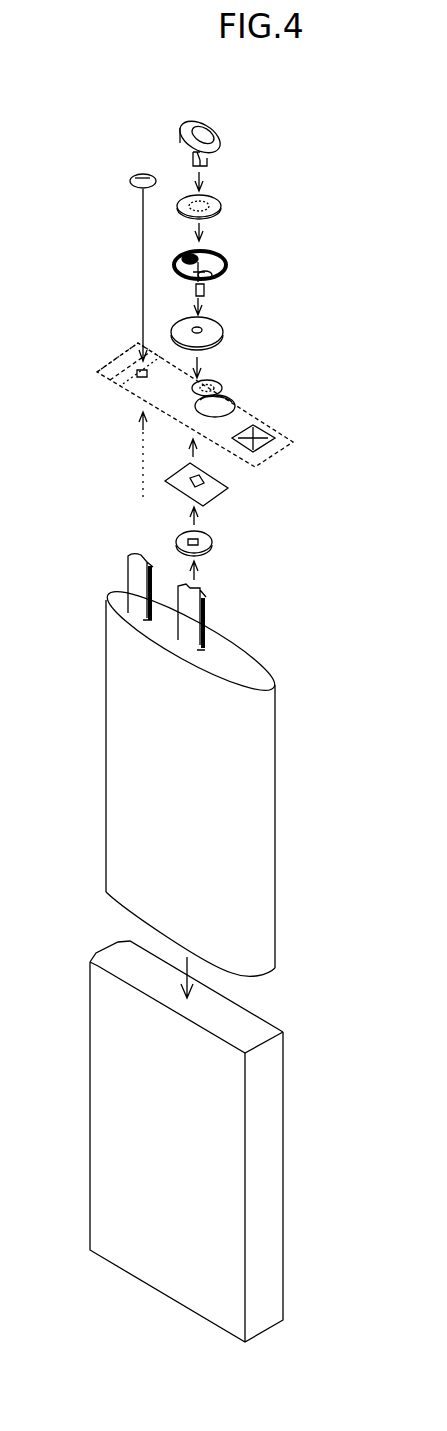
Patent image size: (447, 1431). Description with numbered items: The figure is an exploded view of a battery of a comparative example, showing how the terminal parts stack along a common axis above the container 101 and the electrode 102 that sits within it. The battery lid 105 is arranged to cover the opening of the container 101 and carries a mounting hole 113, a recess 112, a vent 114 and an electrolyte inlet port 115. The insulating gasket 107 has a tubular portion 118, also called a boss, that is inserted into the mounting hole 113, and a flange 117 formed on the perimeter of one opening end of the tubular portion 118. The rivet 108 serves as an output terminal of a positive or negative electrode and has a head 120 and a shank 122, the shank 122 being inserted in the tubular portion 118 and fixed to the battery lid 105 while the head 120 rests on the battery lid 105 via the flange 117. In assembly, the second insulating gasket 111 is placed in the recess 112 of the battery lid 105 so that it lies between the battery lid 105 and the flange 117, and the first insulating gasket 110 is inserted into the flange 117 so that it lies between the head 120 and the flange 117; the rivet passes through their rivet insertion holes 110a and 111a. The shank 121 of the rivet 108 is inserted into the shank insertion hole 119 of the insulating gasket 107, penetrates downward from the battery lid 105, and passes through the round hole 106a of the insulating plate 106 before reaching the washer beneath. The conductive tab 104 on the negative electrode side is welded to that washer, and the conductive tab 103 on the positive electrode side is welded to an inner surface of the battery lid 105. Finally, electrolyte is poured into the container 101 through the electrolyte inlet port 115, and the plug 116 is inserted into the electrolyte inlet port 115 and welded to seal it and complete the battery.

The container 101 is at (270, 1193).
The electrode 102 is at (262, 798).
The conductive tab on the positive electrode side 103 is at (128, 574).
The conductive tab on the negative electrode side 104 is at (184, 635).
The battery lid 105 is at (211, 425).
The insulating plate 106 is at (229, 500).
The round hole 106a is at (208, 500).
The insulating gasket 107 is at (260, 290).
The rivet 108 is at (214, 546).
The first insulating gasket 110 is at (235, 215).
The rivet insertion hole 110a is at (212, 212).
The second insulating gasket 111 is at (142, 311).
The rivet insertion hole 111a is at (178, 315).
The recess 112 is at (222, 378).
The mounting hole 113 is at (224, 406).
The vent 114 is at (265, 428).
The electrolyte inlet port 115 is at (122, 388).
The plug 116 is at (125, 192).
The flange 117 is at (216, 281).
The tubular portion 118 is at (210, 296).
The shank insertion hole 119 is at (222, 258).
The head 120 is at (230, 143).
The shank 121 is at (190, 157).
The shank 122 is at (208, 165).